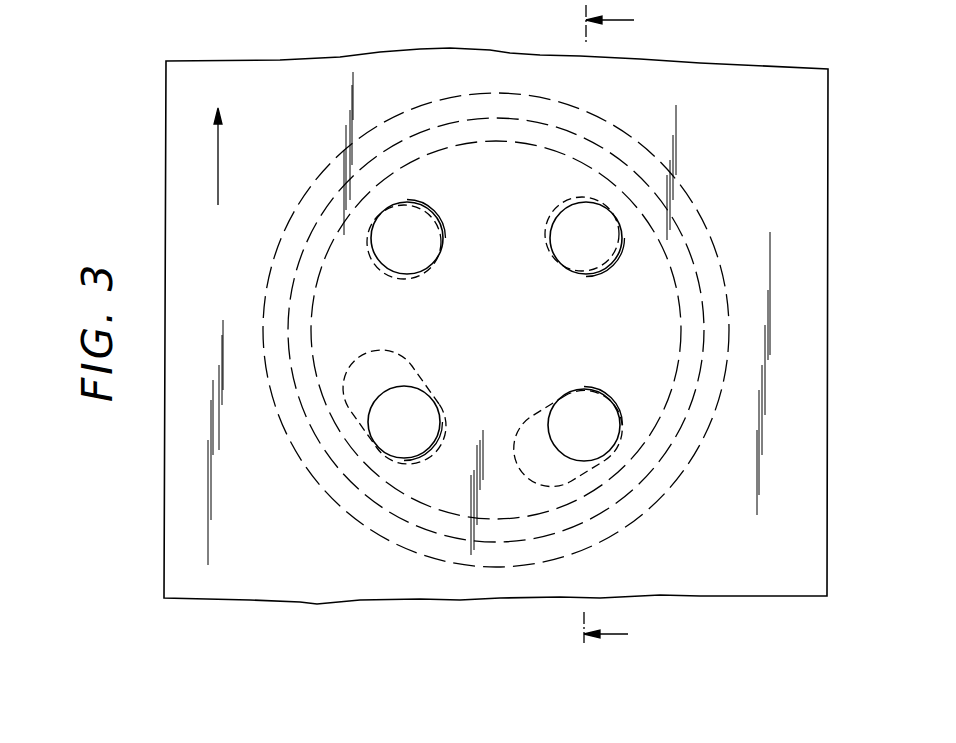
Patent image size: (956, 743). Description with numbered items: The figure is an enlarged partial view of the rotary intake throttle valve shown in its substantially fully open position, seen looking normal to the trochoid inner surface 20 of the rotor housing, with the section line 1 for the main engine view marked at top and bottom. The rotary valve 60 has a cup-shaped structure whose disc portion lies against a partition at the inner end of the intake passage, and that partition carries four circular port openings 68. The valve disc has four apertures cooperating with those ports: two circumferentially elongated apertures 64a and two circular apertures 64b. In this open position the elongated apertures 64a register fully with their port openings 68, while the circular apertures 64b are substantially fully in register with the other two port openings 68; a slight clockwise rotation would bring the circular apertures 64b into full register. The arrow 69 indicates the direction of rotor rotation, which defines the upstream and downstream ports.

The peripheral inner surface 20 is at (210, 68).
The rotary valve 60 is at (300, 283).
The port openings 68 is at (445, 228).
The elongated valve apertures 64a is at (416, 362).
The circular valve apertures 64b is at (370, 256).
The arrow 69 is at (194, 129).
The section line 1 is at (638, 18).